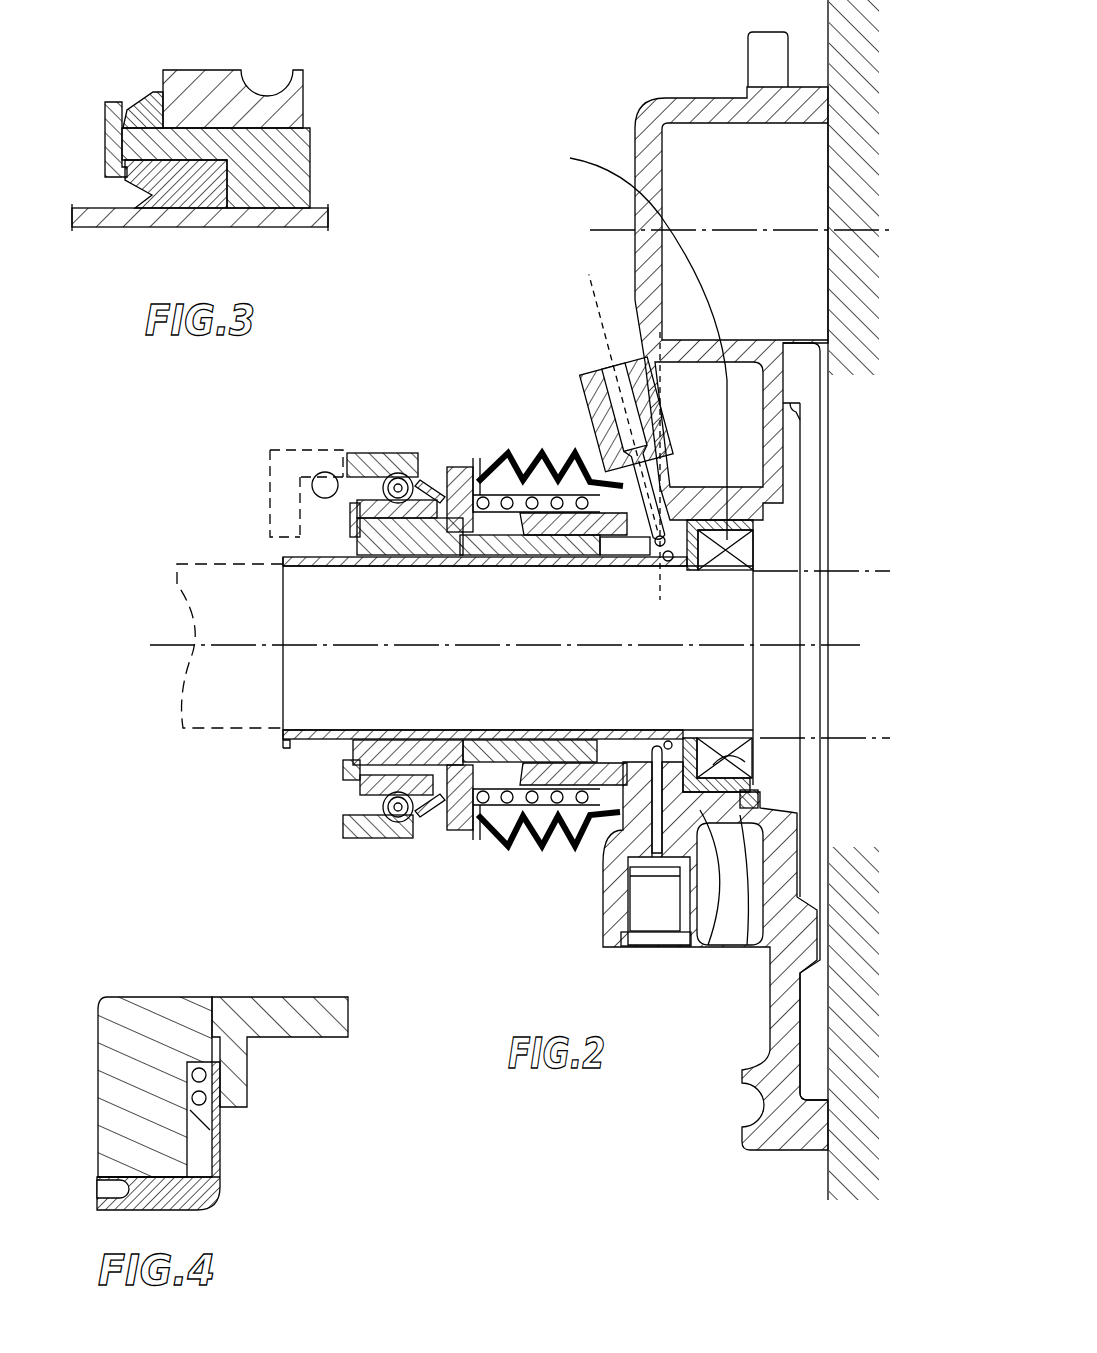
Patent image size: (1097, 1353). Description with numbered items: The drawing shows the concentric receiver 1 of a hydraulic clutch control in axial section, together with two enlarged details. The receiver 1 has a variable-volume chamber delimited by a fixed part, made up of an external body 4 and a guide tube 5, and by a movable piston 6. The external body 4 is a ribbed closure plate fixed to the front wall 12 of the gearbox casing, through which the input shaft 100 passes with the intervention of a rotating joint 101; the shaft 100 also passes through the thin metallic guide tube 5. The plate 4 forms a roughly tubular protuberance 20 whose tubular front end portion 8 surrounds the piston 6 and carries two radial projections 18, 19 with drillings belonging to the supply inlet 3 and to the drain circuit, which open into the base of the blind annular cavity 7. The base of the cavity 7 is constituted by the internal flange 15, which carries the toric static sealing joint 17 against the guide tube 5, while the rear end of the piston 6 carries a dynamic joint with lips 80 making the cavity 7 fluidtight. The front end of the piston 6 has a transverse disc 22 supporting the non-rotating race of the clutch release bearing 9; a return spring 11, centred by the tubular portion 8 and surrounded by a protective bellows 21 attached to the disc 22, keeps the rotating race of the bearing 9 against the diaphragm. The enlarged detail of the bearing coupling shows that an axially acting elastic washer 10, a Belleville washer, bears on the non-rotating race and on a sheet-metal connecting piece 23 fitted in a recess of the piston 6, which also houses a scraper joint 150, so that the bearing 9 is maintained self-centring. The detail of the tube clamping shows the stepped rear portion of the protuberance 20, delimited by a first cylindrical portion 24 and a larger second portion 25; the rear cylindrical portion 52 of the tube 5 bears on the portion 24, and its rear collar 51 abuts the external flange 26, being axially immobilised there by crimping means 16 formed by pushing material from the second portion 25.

In FIG. 2, the concentric receiver 1 is at (442, 423).
In FIG. 2, the supply inlet 3 is at (654, 903).
In FIG. 2, the external body 4 is at (637, 145).
In FIG. 3, the guide tube 5 is at (313, 217).
In FIG. 2, the guide tube 5 is at (323, 567).
In FIG. 3, the piston 6 is at (278, 170).
In FIG. 2, the piston 6 is at (407, 552).
In FIG. 2, the cavity 7 is at (613, 555).
In FIG. 2, the tubular front end portion 8 is at (548, 845).
In FIG. 3, the clutch release bearing 9 is at (267, 123).
In FIG. 2, the clutch release bearing 9 is at (353, 827).
In FIG. 3, the elastic washer 10 is at (143, 100).
In FIG. 2, the return spring 11 is at (487, 830).
In FIG. 2, the front wall 12 is at (855, 1113).
In FIG. 2, the internal flange 15 is at (655, 562).
In FIG. 4, the crimping means 16 is at (247, 1088).
In FIG. 2, the static sealing joint 17 is at (666, 740).
In FIG. 2, the projection 18 is at (604, 890).
In FIG. 2, the projection 19 is at (590, 410).
In FIG. 2, the protuberance 20 is at (716, 945).
In FIG. 2, the protective bellows 21 is at (523, 838).
In FIG. 2, the transverse disc 22 is at (453, 827).
In FIG. 3, the connecting piece 23 is at (107, 110).
In FIG. 2, the connecting piece 23 is at (347, 757).
In FIG. 2, the first cylindrical portion 24 is at (746, 947).
In FIG. 4, the first cylindrical portion 24 is at (103, 1192).
In FIG. 4, the second portion 25 is at (213, 1062).
In FIG. 4, the external flange 26 is at (193, 1098).
In FIG. 4, the collar 51 is at (214, 1157).
In FIG. 4, the rear cylindrical portion 52 is at (163, 1203).
In FIG. 2, the dynamic joint with lips 80 is at (593, 830).
In FIG. 2, the input shaft 100 is at (243, 683).
In FIG. 2, the rotating joint 101 is at (624, 338).
In FIG. 3, the scraper joint 150 is at (177, 207).